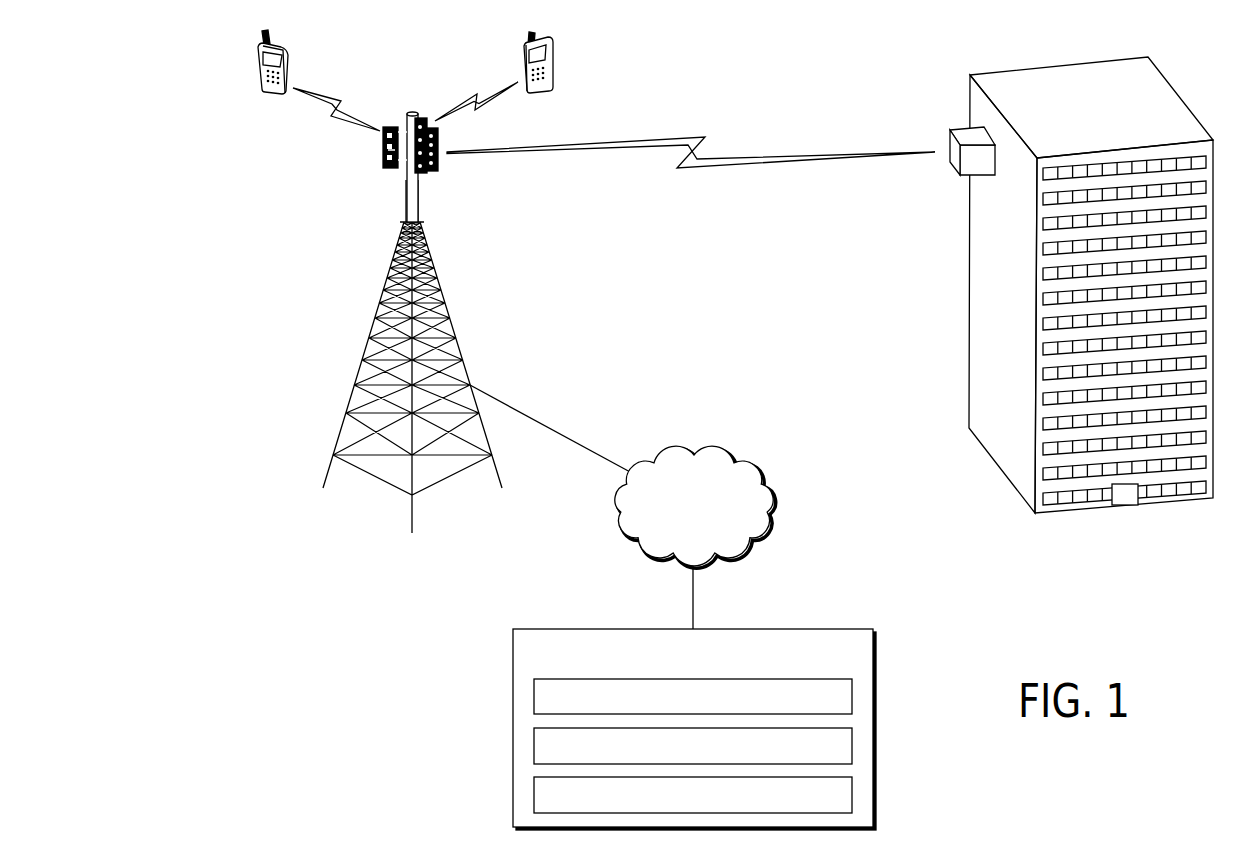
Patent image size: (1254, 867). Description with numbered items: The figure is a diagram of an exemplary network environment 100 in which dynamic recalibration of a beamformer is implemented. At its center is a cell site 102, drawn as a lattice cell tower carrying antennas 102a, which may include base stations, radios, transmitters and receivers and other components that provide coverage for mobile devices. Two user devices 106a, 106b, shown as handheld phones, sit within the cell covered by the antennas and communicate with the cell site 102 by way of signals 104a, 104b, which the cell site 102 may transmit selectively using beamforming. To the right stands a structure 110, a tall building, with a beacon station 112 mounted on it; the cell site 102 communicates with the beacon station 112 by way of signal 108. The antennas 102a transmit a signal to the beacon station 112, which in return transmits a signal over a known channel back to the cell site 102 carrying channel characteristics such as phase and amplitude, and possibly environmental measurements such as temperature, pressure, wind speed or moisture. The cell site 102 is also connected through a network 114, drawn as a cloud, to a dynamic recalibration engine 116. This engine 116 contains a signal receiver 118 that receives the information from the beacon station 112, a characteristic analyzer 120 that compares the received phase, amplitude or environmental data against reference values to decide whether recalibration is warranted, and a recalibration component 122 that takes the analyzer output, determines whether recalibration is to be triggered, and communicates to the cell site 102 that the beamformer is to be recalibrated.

The network environment 100 is at (297, 644).
The cell site 102 is at (373, 329).
The antennas 102a is at (383, 150).
The signal 104a is at (336, 111).
The signal 104b is at (474, 100).
The user device 106a is at (258, 50).
The user device 106b is at (556, 60).
The signal 108 is at (677, 140).
The structure 110 is at (1156, 98).
The beacon station 112 is at (965, 137).
The network 114 is at (771, 501).
The dynamic recalibration engine 116 is at (550, 629).
The signal receiver 118 is at (534, 696).
The characteristic analyzer 120 is at (534, 744).
The recalibration component 122 is at (534, 793).